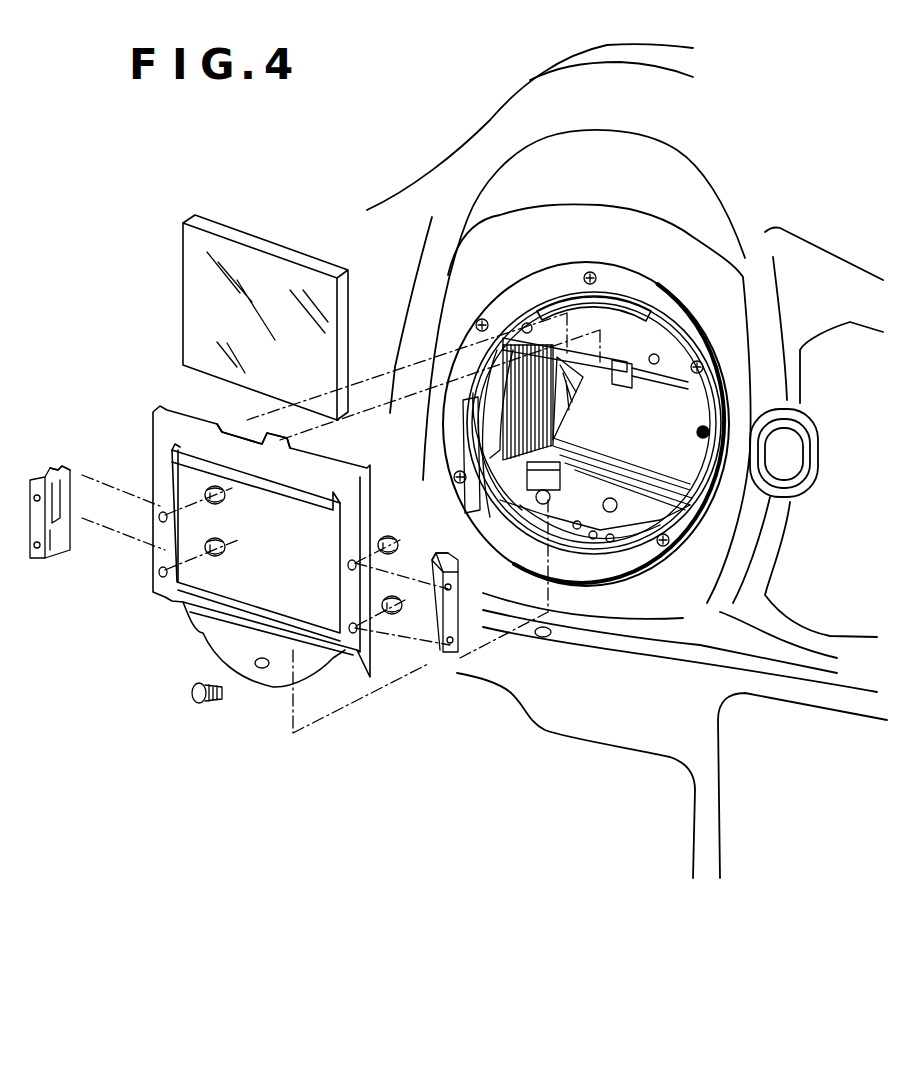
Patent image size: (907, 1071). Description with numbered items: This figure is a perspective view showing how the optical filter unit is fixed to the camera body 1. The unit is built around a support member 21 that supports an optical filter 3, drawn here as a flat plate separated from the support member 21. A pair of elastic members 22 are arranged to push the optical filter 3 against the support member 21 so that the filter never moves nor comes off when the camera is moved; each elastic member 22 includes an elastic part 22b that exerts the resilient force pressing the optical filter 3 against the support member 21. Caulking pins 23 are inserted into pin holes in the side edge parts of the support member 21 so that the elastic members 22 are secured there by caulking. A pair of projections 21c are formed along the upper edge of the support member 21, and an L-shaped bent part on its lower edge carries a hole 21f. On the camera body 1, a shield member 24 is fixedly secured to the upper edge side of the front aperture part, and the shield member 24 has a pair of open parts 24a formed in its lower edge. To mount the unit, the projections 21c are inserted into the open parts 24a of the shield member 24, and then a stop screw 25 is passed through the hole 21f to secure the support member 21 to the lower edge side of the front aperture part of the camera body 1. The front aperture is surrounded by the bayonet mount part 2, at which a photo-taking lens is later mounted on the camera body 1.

The camera body 1 is at (443, 203).
The bayonet mount part 2 is at (655, 565).
The optical filter 3 is at (202, 292).
The support member 21 is at (162, 597).
The projections 21c is at (220, 430).
The hole 21f is at (262, 670).
The elastic members 22 is at (34, 565).
The elastic part 22b is at (63, 497).
The caulking pins 23 is at (390, 538).
The shield member 24 is at (647, 340).
The open parts 24a is at (587, 360).
The stop screw 25 is at (200, 710).